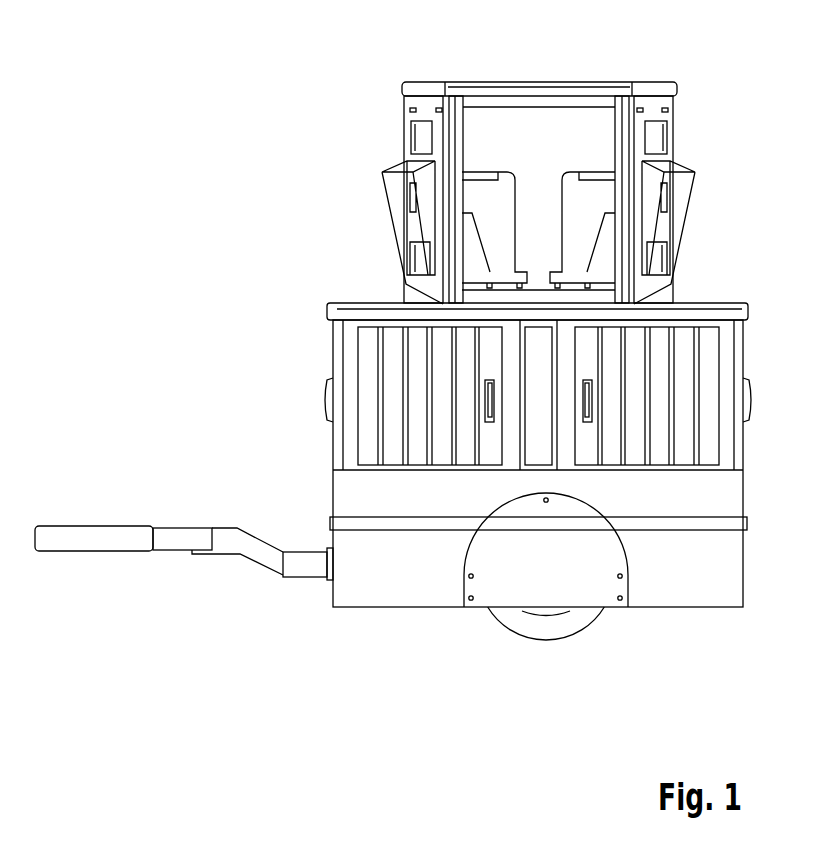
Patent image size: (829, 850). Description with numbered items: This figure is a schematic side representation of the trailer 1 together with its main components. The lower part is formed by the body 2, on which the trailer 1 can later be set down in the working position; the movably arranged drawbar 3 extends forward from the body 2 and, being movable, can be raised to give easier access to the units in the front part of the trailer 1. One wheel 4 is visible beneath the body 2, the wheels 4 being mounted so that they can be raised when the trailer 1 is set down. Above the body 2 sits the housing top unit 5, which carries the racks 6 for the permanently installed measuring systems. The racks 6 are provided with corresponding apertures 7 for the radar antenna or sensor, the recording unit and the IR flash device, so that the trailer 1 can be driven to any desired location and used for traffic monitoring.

The trailer 1 is at (248, 175).
The body 2 is at (726, 564).
The drawbar 3 is at (80, 540).
The wheel 4 is at (537, 632).
The housing top unit 5 is at (575, 90).
The rack 6 is at (478, 255).
The apertures 7 is at (655, 137).